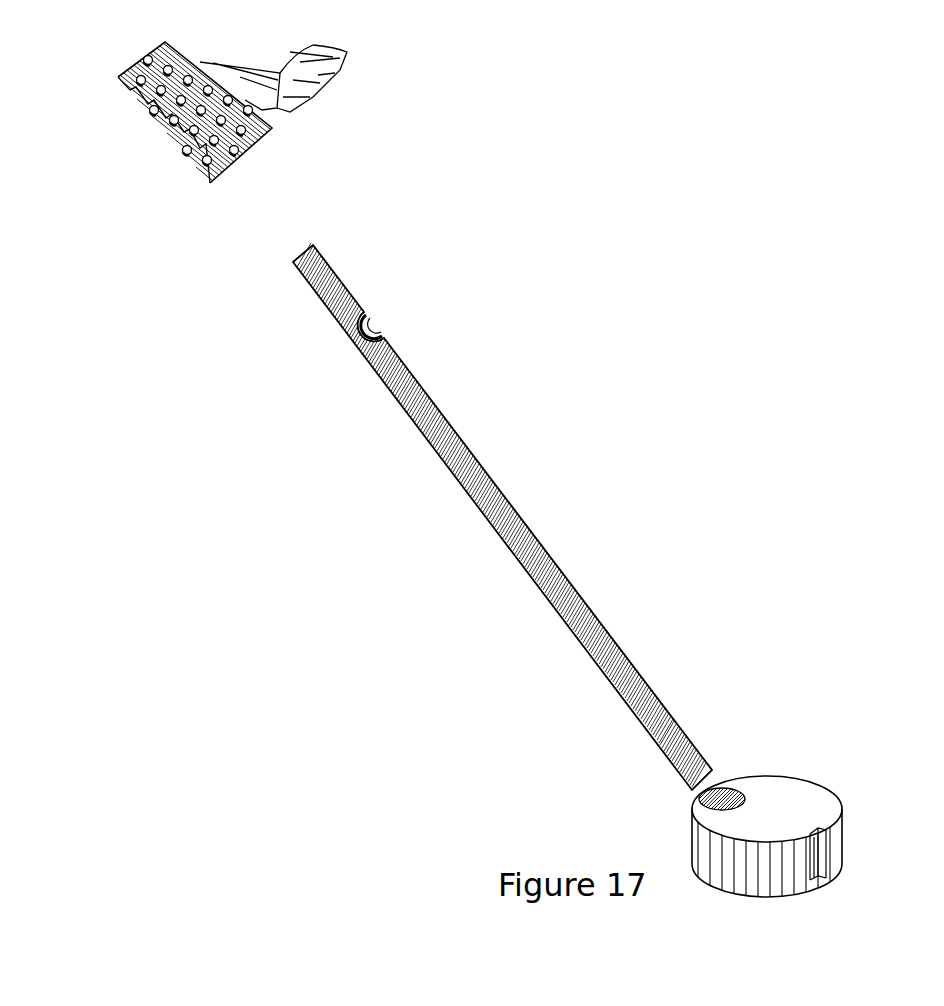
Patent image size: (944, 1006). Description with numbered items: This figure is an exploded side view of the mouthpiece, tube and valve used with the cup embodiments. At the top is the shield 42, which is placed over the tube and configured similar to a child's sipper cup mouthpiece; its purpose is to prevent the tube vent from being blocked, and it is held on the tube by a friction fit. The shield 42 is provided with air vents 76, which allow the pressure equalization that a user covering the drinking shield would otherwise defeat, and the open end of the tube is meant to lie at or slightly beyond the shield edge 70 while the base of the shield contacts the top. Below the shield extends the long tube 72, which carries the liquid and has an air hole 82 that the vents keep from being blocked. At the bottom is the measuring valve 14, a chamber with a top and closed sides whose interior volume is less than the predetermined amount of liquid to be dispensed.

The shield edge 70 is at (123, 73).
The shield 42 is at (187, 72).
The air vents 76 is at (190, 161).
The tube 72 is at (472, 448).
The air hole 82 is at (374, 322).
The measuring valve 14 is at (793, 790).